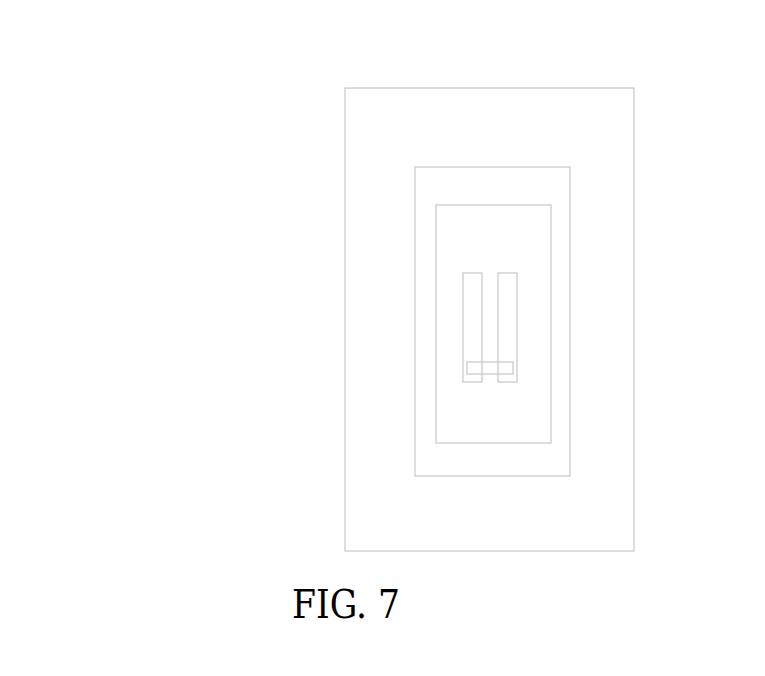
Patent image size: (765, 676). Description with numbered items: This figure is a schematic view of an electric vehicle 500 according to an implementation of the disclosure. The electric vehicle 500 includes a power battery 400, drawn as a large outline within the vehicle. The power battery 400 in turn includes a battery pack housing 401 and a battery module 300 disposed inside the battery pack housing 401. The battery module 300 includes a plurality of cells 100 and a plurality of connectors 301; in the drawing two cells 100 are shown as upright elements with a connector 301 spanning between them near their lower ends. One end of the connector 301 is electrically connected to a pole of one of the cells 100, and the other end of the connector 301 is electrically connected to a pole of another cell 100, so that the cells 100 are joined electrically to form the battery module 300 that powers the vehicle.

The electric vehicle 500 is at (518, 47).
The power battery 400 is at (148, 147).
The battery pack housing 401 is at (414, 167).
The battery module 300 is at (223, 215).
The cell 100 is at (473, 297).
The connector 301 is at (490, 368).